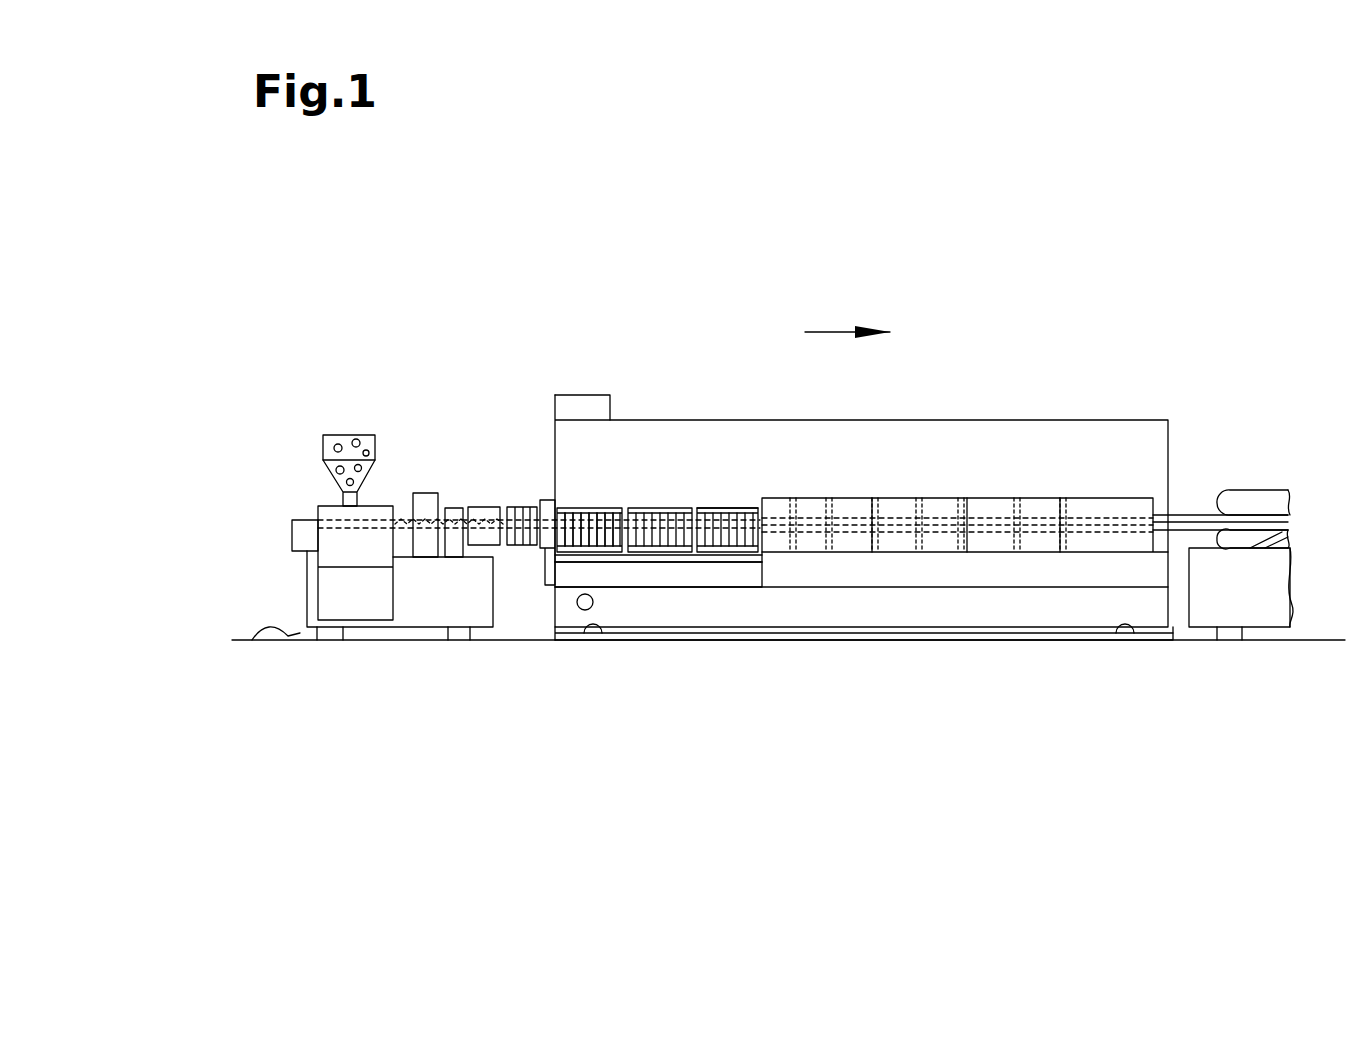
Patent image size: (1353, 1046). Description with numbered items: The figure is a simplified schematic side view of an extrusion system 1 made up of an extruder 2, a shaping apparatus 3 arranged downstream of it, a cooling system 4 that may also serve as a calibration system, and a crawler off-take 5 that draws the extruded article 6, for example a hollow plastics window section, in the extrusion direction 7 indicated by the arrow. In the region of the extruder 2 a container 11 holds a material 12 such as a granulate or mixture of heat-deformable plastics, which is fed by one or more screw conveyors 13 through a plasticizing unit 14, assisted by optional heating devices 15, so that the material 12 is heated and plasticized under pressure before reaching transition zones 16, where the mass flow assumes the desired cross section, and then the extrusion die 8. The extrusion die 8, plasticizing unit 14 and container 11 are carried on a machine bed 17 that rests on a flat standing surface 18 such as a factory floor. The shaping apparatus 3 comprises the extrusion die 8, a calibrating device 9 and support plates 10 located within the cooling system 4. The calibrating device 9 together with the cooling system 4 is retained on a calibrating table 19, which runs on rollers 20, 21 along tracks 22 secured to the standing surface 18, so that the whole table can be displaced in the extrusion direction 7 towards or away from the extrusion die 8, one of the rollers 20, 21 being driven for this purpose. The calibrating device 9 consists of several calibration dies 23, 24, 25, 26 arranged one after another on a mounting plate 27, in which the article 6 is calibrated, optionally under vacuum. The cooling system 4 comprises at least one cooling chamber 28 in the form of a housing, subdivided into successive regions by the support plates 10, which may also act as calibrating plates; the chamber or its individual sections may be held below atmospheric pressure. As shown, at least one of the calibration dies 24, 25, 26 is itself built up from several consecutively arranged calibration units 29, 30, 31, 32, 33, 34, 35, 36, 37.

The extrusion system 1 is at (541, 211).
The extruder 2 is at (399, 419).
The shaping apparatus 3 is at (564, 462).
The cooling system 4 is at (968, 486).
The crawler off-take 5 is at (1260, 502).
The extruded article 6 is at (1187, 517).
The extrusion direction 7 is at (833, 330).
The extrusion die 8 is at (533, 506).
The calibrating device 9 is at (685, 565).
The support plates 10 is at (869, 531).
The container 11 is at (330, 437).
The material 12 is at (328, 458).
The screw conveyors 13 is at (490, 545).
The plasticizing unit 14 is at (454, 497).
The heating devices 15 is at (487, 507).
The transition zones 16 is at (545, 586).
The machine bed 17 is at (412, 616).
The standing surface 18 is at (262, 645).
The calibrating table 19 is at (778, 605).
The roller 20 is at (597, 636).
The roller 21 is at (1128, 635).
The tracks 22 is at (985, 636).
The calibration die 23 is at (550, 500).
The calibration die 24 is at (604, 543).
The calibration die 25 is at (720, 504).
The calibration die 26 is at (760, 503).
The mounting plate 27 is at (727, 562).
The cooling chamber 28 is at (1080, 510).
The calibration unit 29 is at (567, 508).
The calibration unit 30 is at (575, 508).
The calibration unit 31 is at (584, 508).
The calibration unit 32 is at (593, 508).
The calibration unit 33 is at (601, 508).
The calibration unit 34 is at (609, 508).
The calibration unit 35 is at (617, 508).
The calibration unit 36 is at (623, 508).
The calibration unit 37 is at (662, 504).